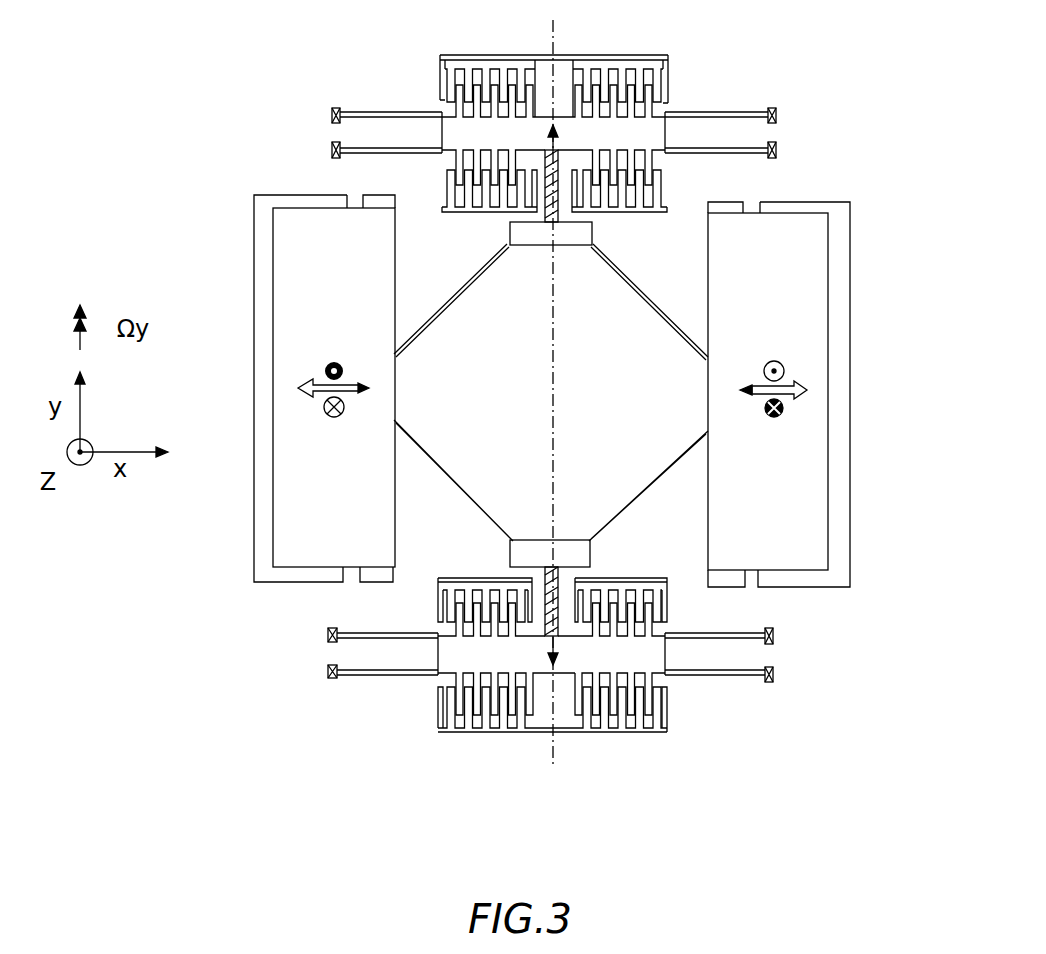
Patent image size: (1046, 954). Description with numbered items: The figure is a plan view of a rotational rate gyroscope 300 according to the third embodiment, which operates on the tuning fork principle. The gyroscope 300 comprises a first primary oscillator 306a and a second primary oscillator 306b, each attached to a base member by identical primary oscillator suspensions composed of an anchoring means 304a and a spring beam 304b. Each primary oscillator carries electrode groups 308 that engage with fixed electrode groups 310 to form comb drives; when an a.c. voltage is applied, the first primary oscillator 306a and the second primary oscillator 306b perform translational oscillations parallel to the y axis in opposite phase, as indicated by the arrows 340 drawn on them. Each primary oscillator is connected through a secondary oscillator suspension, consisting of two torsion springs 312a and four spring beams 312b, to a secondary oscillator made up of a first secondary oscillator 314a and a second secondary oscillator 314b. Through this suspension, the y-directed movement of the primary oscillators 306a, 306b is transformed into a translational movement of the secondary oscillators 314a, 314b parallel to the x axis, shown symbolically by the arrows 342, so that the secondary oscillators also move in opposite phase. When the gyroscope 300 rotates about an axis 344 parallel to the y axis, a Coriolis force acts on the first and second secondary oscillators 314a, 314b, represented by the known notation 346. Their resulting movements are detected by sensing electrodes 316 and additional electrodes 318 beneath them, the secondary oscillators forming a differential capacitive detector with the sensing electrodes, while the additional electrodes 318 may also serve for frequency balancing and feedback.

The rotational rate gyroscope 300 is at (113, 122).
The anchoring means 304a is at (378, 640).
The spring beam 304b is at (740, 642).
The first primary oscillator 306a is at (513, 133).
The second primary oscillator 306b is at (493, 648).
The electrode groups 308 is at (663, 103).
The fixed electrode groups 310 is at (442, 72).
The torsion springs 312a is at (545, 205).
The spring beams 312b is at (448, 312).
The first secondary oscillator 314a is at (300, 505).
The second secondary oscillator 314b is at (795, 520).
The sensing electrodes 316 is at (282, 206).
The additional electrodes 318 is at (374, 206).
The arrows 340 is at (550, 637).
The arrows 342 is at (790, 383).
The axis 344 is at (555, 45).
The notation 346 is at (764, 371).